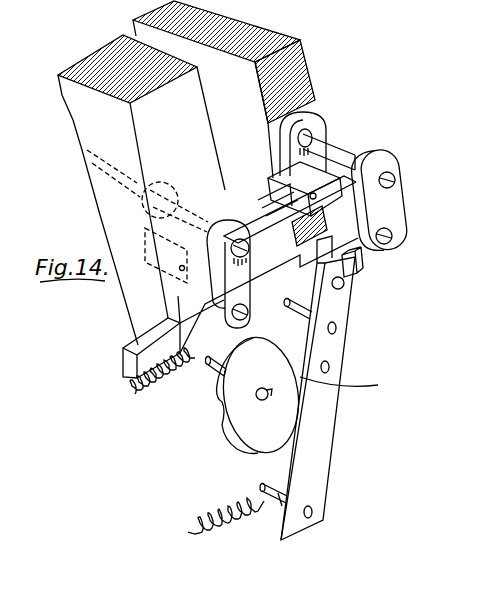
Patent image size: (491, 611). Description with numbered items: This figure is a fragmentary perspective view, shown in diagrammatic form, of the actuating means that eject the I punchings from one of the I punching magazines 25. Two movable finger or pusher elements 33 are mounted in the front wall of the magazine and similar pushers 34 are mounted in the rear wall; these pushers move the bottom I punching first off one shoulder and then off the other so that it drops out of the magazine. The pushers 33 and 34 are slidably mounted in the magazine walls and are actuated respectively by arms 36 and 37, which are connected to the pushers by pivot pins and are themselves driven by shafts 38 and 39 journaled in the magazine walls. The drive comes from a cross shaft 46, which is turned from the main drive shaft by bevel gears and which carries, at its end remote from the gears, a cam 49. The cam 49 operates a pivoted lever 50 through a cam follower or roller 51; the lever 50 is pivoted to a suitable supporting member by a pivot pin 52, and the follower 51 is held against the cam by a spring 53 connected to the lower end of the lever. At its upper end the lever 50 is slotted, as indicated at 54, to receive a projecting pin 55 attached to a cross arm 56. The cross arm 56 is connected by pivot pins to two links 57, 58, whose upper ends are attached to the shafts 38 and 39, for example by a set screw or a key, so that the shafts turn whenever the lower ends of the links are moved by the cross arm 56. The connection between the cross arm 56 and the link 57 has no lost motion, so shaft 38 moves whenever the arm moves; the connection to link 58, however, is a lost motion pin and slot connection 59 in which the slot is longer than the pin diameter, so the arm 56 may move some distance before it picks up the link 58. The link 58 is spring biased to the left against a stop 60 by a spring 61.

The I punching magazine 25 is at (250, 90).
The arm 36 is at (315, 120).
The shaft 38 is at (340, 147).
The movable finger or pusher element 33 is at (330, 175).
The link 57 is at (392, 207).
The shaft 39 is at (188, 215).
The arm 37 is at (140, 213).
The movable finger or pusher 34 is at (148, 258).
The cross arm 56 is at (272, 268).
The I punching I is at (233, 197).
The link 58 is at (228, 272).
The pin and slot connection 59 is at (210, 303).
The pivoted lever 50 is at (337, 346).
The cam follower or roller 51 is at (348, 384).
The slot 54 is at (359, 273).
The projecting pin 55 is at (345, 285).
The pivot pin 52 is at (294, 311).
The cam 49 is at (228, 437).
The cross shaft 46 is at (212, 368).
The stop 60 is at (123, 360).
The spring 61 is at (166, 385).
The spring 53 is at (210, 522).